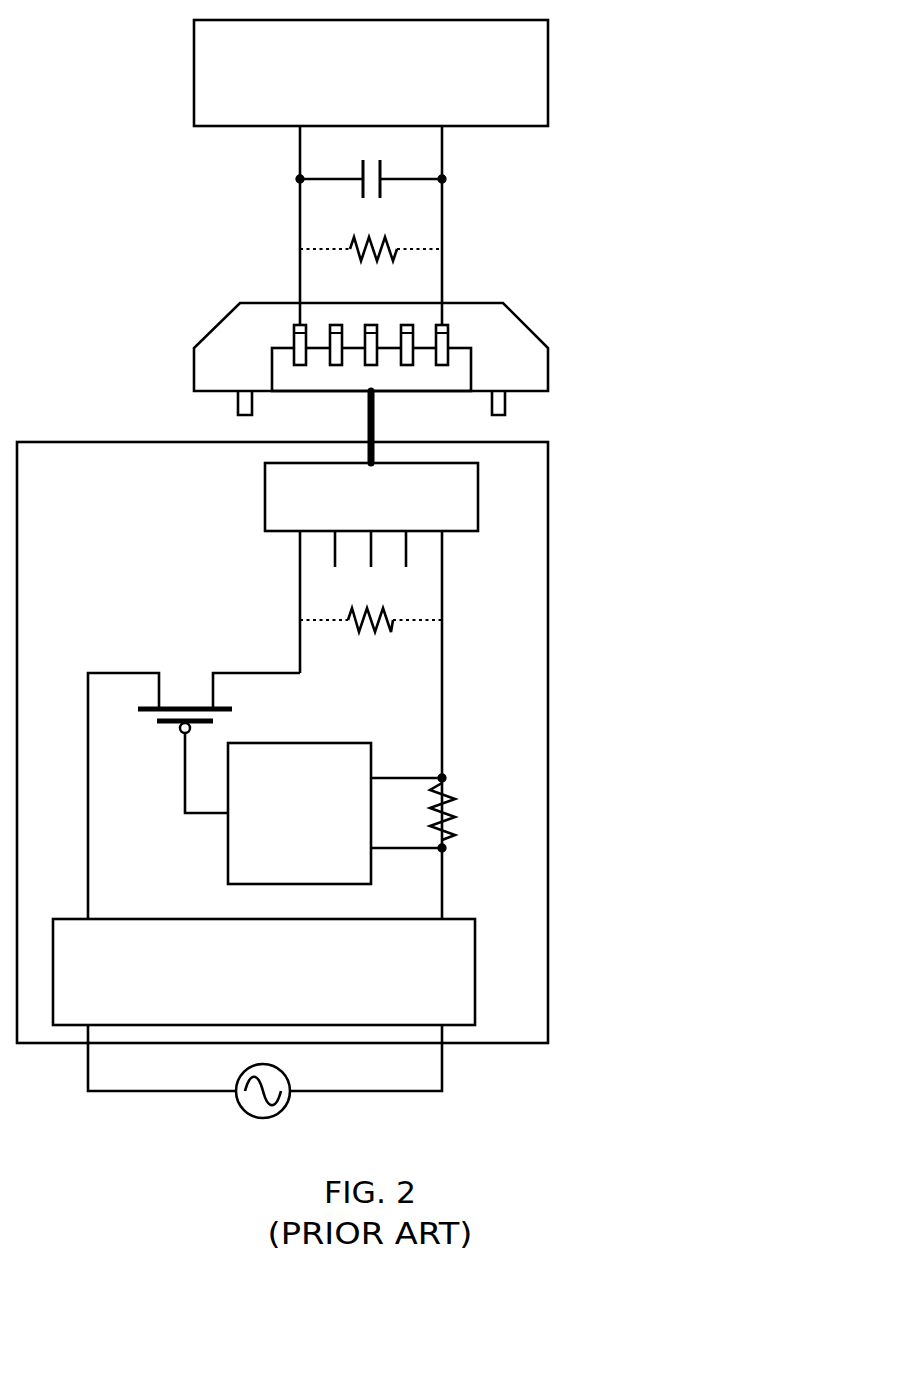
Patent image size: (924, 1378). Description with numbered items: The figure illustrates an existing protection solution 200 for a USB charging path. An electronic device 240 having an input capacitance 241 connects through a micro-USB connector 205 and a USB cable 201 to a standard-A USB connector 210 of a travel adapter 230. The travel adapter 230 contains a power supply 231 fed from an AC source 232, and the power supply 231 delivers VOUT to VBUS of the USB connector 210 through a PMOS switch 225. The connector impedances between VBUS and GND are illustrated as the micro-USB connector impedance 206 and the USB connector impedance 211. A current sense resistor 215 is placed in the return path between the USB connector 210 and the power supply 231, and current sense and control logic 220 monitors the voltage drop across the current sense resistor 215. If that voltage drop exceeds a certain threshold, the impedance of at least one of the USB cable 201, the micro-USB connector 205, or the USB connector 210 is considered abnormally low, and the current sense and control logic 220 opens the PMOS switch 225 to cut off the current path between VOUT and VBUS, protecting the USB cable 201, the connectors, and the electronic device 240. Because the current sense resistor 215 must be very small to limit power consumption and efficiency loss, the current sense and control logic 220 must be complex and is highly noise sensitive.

The existing protection solution 200 is at (362, 567).
The USB cable 201 is at (375, 424).
The micro-USB connector 205 is at (548, 355).
The micro-USB connector impedance 206 is at (353, 257).
The standard-A (STD-A) USB connector 210 is at (478, 497).
The USB connector impedance 211 is at (408, 606).
The current sense resistor 215 is at (455, 838).
The current sense and control logic 220 is at (228, 848).
The PMOS switch 225 is at (185, 702).
The travel adapter 230 is at (548, 480).
The power supply 231 is at (477, 955).
The AC source 232 is at (240, 1100).
The electronic device 240 is at (548, 55).
The input capacitance 241 is at (408, 155).